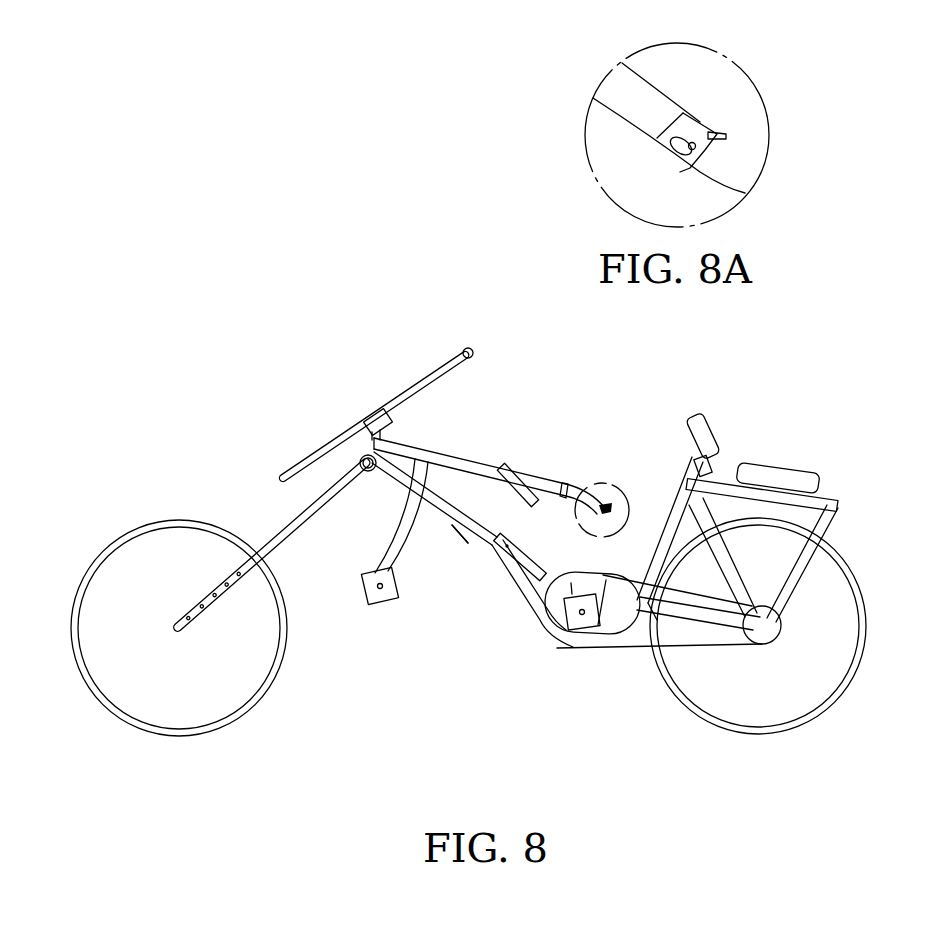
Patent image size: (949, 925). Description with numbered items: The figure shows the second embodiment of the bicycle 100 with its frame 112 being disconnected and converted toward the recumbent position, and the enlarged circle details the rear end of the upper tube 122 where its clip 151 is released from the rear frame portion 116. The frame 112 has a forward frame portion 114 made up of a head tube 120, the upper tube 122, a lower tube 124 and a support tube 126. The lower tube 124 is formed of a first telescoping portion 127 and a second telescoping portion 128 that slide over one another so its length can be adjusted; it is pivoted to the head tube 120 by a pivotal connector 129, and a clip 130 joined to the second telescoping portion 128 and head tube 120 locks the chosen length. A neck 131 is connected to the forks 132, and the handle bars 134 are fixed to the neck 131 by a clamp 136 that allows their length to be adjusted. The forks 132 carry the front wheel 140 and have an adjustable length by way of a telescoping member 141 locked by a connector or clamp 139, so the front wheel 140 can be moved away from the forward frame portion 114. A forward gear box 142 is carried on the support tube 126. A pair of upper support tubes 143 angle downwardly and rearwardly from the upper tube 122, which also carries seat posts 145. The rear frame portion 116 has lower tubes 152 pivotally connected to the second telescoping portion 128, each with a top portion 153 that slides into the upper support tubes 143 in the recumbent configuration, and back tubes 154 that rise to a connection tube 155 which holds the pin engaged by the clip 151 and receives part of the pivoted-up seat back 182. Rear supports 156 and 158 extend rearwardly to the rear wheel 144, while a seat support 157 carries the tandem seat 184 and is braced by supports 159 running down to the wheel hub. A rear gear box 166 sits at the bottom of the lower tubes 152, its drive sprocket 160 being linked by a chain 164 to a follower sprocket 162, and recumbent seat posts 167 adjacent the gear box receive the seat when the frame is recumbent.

In FIG. 8, the bicycle 100 is at (552, 382).
In FIG. 8, the frame 112 is at (481, 462).
In FIG. 8, the forward frame portion 114 is at (394, 488).
In FIG. 8, the rear frame portion 116 is at (676, 472).
In FIG. 8, the head tube 120 is at (363, 437).
In FIG. 8A, the upper tube 122 is at (655, 83).
In FIG. 8, the upper tube 122 is at (454, 460).
In FIG. 8, the lower tube 124 is at (428, 513).
In FIG. 8, the support tube 126 is at (390, 544).
In FIG. 8, the first telescoping portion 127 is at (425, 500).
In FIG. 8, the second telescoping portion 128 is at (460, 527).
In FIG. 8, the pivotal connector 129 is at (373, 466).
In FIG. 8, the clip 130 is at (330, 486).
In FIG. 8, the neck 131 is at (387, 412).
In FIG. 8, the forks 132 is at (278, 540).
In FIG. 8, the handle bars 134 is at (447, 362).
In FIG. 8, the clamp 136 is at (367, 440).
In FIG. 8, the connector or clamp 139 is at (228, 568).
In FIG. 8, the front wheel 140 is at (115, 544).
In FIG. 8, the telescoping member 141 is at (212, 607).
In FIG. 8, the forward gear box 142 is at (378, 606).
In FIG. 8, the upper support tubes 143 is at (527, 478).
In FIG. 8, the rear wheel 144 is at (815, 725).
In FIG. 8, the seat posts 145 is at (572, 487).
In FIG. 8A, the clip 151 is at (742, 192).
In FIG. 8, the clip 151 is at (603, 536).
In FIG. 8, the lower tubes 152 is at (520, 581).
In FIG. 8, the top portion 153 is at (506, 540).
In FIG. 8, the back tubes 154 is at (665, 548).
In FIG. 8, the connection tube 155 is at (707, 462).
In FIG. 8, the rear supports 156 is at (758, 582).
In FIG. 8, the seat support 157 is at (840, 512).
In FIG. 8, the rear supports 158 is at (712, 625).
In FIG. 8, the supports 159 is at (835, 560).
In FIG. 8, the drive sprocket 160 is at (572, 650).
In FIG. 8, the follower sprocket 162 is at (768, 635).
In FIG. 8, the chain 164 is at (620, 650).
In FIG. 8, the rear gear box 166 is at (587, 628).
In FIG. 8, the recumbent seat posts 167 is at (657, 620).
In FIG. 8, the seat back 182 is at (697, 434).
In FIG. 8, the tandem seat 184 is at (800, 470).